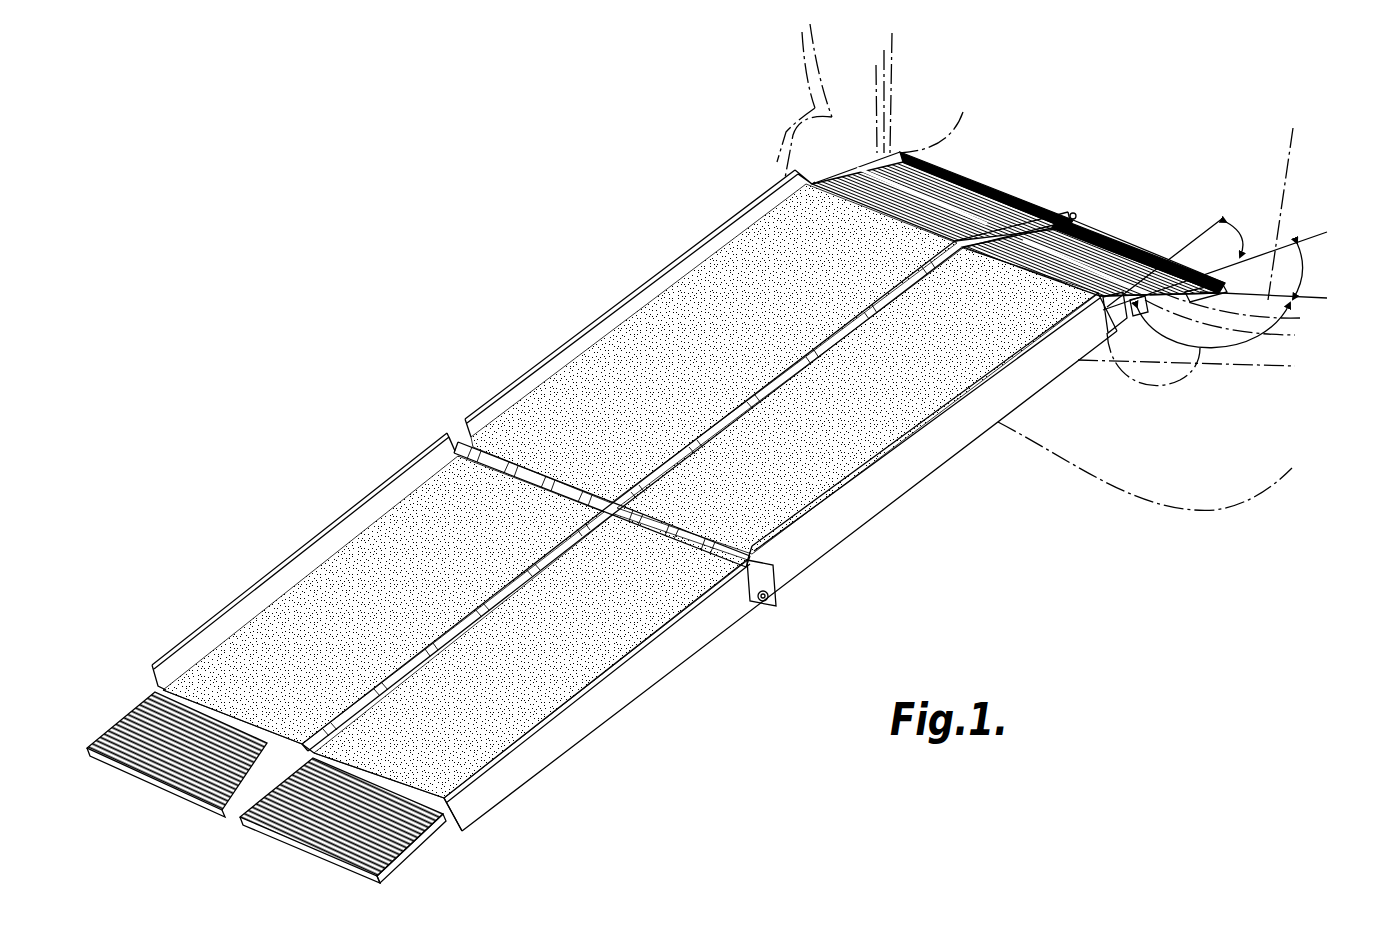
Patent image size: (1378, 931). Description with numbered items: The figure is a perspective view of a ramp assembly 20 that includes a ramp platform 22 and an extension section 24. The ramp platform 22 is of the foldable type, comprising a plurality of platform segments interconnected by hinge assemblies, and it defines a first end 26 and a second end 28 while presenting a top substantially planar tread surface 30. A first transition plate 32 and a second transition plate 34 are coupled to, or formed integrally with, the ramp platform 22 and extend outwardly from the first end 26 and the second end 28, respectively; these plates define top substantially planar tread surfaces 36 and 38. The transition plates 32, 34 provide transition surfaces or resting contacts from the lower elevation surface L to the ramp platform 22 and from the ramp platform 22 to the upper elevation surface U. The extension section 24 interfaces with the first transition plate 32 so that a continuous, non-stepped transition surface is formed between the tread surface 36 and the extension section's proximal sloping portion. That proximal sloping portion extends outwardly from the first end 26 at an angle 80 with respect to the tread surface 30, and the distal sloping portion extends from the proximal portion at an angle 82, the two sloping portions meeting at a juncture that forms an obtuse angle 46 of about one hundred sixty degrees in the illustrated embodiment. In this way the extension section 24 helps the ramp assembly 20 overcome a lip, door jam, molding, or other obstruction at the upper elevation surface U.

The ramp assembly 20 is at (641, 496).
The ramp platform 22 is at (867, 487).
The extension section 24 is at (1137, 246).
The first end 26 is at (1110, 333).
The second end 28 is at (464, 832).
The tread surface 30 is at (900, 422).
The first transition plate 32 is at (1139, 312).
The second transition plate 34 is at (413, 848).
The tread surface 36 is at (1030, 254).
The tread surface 38 is at (318, 833).
The obtuse angle 46 is at (1200, 350).
The angle 80 is at (1248, 240).
The angle 82 is at (1300, 268).
The upper elevation surface U is at (893, 100).
The lower elevation surface L is at (65, 802).